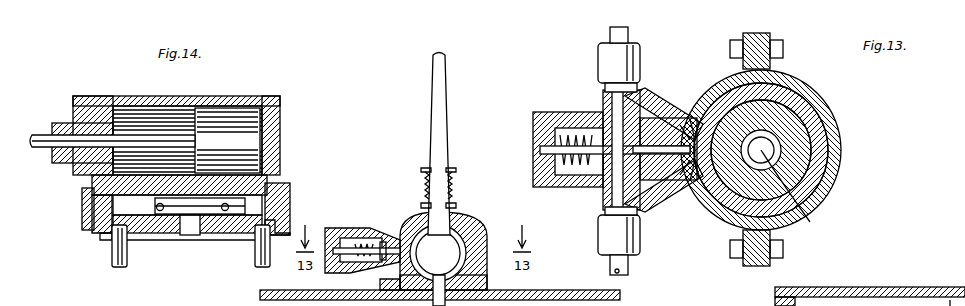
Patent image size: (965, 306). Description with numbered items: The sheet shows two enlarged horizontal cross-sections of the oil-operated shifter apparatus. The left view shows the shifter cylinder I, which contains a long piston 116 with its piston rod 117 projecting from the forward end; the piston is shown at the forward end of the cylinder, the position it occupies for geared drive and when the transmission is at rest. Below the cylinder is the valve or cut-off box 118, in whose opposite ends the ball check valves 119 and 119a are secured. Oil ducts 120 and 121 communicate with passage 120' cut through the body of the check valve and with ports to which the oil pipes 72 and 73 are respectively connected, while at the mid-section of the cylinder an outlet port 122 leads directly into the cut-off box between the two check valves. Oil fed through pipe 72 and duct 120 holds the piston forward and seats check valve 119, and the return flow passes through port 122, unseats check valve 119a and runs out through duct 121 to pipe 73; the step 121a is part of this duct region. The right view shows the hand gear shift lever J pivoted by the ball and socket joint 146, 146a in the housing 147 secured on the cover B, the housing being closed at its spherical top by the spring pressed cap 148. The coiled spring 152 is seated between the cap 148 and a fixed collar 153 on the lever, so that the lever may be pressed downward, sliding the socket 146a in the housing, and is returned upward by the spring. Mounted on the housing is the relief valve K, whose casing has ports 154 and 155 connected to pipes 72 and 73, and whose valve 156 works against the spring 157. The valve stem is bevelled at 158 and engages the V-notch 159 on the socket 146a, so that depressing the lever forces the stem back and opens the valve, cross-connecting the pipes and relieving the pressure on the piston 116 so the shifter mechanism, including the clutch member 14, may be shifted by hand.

In FIG. 14, the piston 116 is at (255, 118).
In FIG. 14, the cylinder I is at (268, 140).
In FIG. 14, the outlet port 122 is at (188, 180).
In FIG. 14, the piston rod 117 is at (40, 148).
In FIG. 14, the oil duct 121 is at (262, 182).
In FIG. 14, the plate step 121a is at (283, 196).
In FIG. 14, the oil duct 120 is at (187, 191).
In FIG. 14, the passage 120' is at (149, 210).
In FIG. 14, the valve or cut-off box 118 is at (170, 233).
In FIG. 14, the ball check valve 119 is at (158, 233).
In FIG. 14, the ball check valve 119a is at (222, 230).
In FIG. 14, the oil pipe 72 is at (112, 255).
In FIG. 13, the oil pipe 72 is at (610, 35).
In FIG. 14, the oil pipe 73 is at (258, 262).
In FIG. 13, the oil pipe 73 is at (630, 266).
In FIG. 14, the hand gear shift lever J is at (434, 88).
In FIG. 13, the hand gear shift lever J is at (792, 199).
In FIG. 14, the spring pressed cap 148 is at (455, 225).
In FIG. 14, the ball 146 is at (462, 238).
In FIG. 13, the ball 146 is at (800, 122).
In FIG. 13, the socket 146a is at (815, 135).
In FIG. 13, the housing 147 is at (840, 160).
In FIG. 14, the coiled spring 152 is at (455, 180).
In FIG. 14, the fixed collar 153 is at (452, 170).
In FIG. 14, the relief valve K is at (338, 230).
In FIG. 13, the relief valve K is at (568, 112).
In FIG. 14, the valve 156 is at (385, 238).
In FIG. 13, the valve 156 is at (606, 212).
In FIG. 14, the spring 157 is at (356, 238).
In FIG. 13, the spring 157 is at (600, 170).
In FIG. 14, the bevelled end of valve stem 158 is at (395, 235).
In FIG. 13, the bevelled end of valve stem 158 is at (690, 182).
In FIG. 13, the port 154 is at (632, 110).
In FIG. 13, the port 155 is at (628, 190).
In FIG. 13, the V-notch or groove 159 is at (688, 132).
In FIG. 13, the cover B is at (900, 286).
In FIG. 13, the clutch member 14 is at (948, 286).